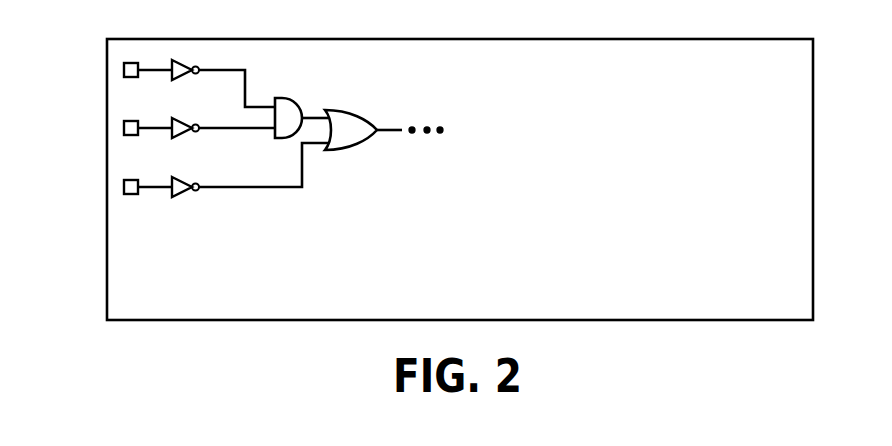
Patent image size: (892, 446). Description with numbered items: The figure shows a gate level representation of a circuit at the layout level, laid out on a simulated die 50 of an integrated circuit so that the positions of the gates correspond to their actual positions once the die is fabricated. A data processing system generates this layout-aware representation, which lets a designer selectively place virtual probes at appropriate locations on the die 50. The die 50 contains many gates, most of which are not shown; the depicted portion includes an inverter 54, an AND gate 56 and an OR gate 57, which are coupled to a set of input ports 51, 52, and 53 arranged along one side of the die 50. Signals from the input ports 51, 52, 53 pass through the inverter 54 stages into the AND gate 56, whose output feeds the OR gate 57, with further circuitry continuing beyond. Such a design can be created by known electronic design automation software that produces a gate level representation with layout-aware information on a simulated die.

The die 50 is at (622, 38).
The input port 51 is at (123, 69).
The input port 52 is at (123, 127).
The input port 53 is at (123, 186).
The inverter 54 is at (180, 62).
The AND gate 56 is at (295, 98).
The OR gate 57 is at (363, 112).